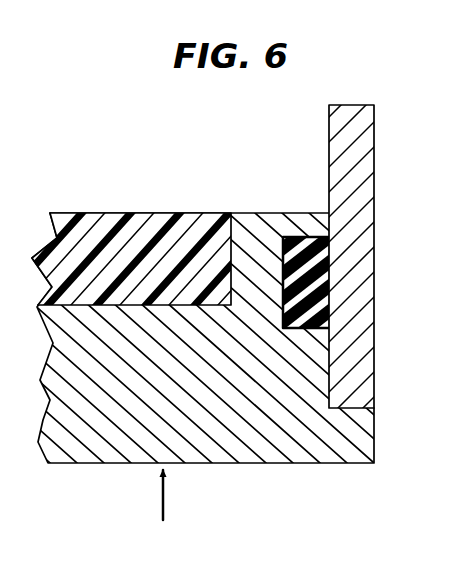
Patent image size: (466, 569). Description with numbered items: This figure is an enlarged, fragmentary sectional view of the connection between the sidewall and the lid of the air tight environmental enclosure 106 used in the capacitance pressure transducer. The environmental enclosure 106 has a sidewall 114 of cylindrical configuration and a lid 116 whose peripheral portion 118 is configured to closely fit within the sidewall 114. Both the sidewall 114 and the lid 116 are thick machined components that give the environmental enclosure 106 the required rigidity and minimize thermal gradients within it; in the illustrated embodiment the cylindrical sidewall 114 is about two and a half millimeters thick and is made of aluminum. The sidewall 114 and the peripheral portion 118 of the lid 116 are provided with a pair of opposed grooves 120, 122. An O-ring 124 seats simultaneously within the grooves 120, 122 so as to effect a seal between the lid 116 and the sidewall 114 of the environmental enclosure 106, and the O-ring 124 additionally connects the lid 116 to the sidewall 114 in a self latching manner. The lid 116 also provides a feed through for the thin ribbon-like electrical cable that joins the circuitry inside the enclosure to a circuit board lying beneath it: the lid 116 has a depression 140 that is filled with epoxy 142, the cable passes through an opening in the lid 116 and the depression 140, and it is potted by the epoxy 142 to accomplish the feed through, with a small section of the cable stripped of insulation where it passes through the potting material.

The environmental enclosure 106 is at (233, 281).
The sidewall 114 is at (351, 135).
The lid 116 is at (160, 513).
The peripheral portion 118 is at (302, 437).
The groove 120 is at (331, 309).
The groove 122 is at (355, 279).
The O-ring 124 is at (333, 290).
The depression 140 is at (179, 225).
The epoxy 142 is at (85, 248).